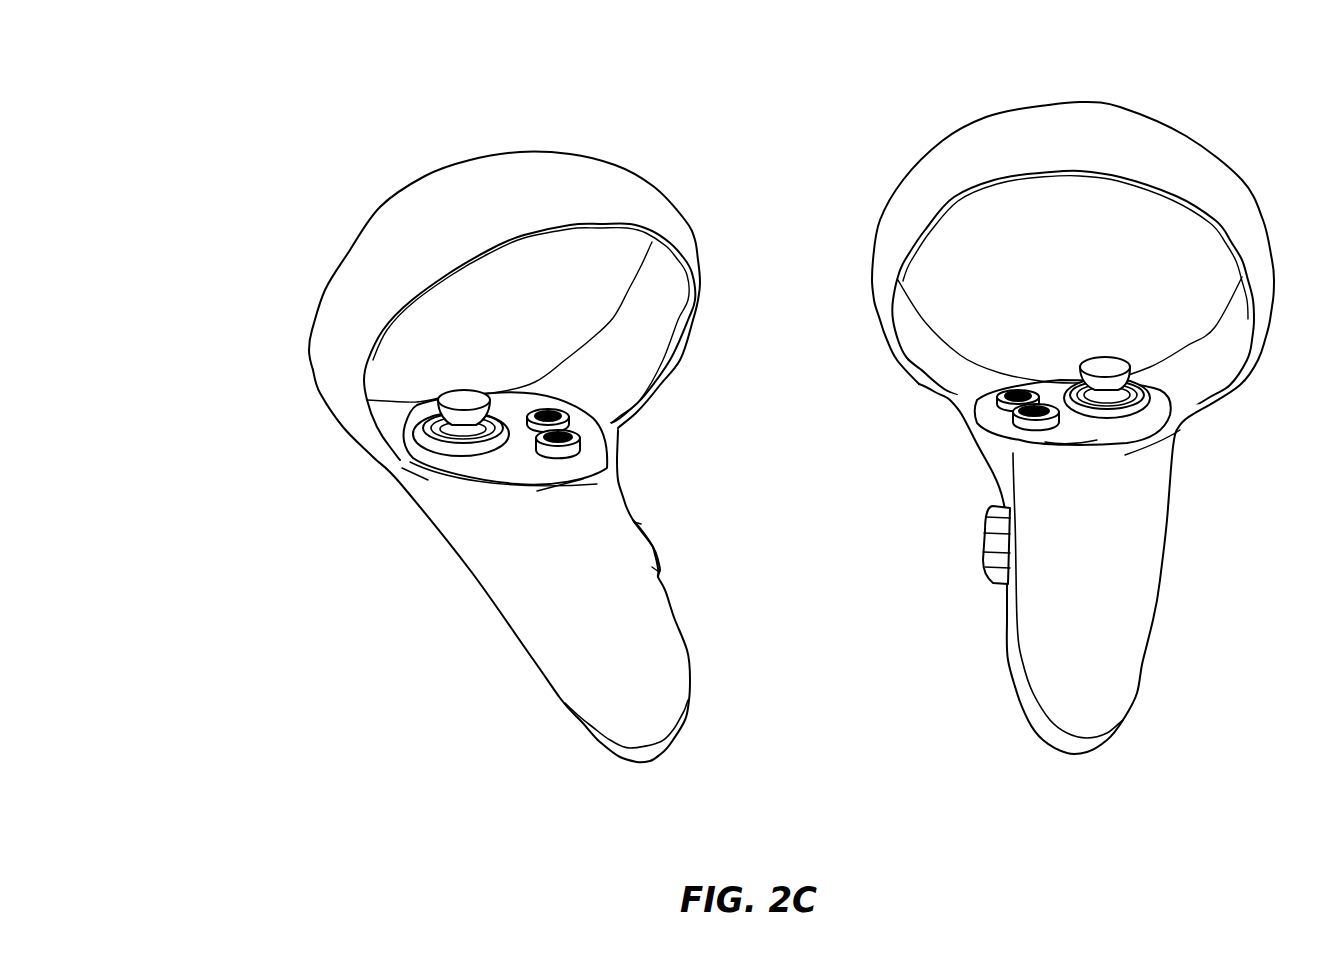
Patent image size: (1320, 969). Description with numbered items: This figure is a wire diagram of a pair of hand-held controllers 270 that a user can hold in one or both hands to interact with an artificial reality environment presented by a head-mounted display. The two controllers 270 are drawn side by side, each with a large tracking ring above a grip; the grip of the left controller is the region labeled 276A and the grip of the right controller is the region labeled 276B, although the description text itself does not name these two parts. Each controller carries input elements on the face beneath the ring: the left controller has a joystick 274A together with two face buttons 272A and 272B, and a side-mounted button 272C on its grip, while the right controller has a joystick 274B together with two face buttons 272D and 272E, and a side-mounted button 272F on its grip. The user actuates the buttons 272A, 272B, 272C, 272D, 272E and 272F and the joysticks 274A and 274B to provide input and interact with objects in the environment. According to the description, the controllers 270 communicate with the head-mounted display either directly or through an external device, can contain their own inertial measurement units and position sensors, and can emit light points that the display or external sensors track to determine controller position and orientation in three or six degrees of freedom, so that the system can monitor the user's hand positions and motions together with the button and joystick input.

The controllers 270 is at (700, 425).
The button 272A is at (532, 410).
The button 272B is at (582, 429).
The button 272C is at (648, 538).
The button 272D is at (1003, 390).
The button 272E is at (1032, 426).
The button 272F is at (985, 543).
The joystick 274A is at (464, 391).
The joystick 274B is at (1103, 363).
The handle 276A is at (665, 752).
The handle 276B is at (1067, 753).